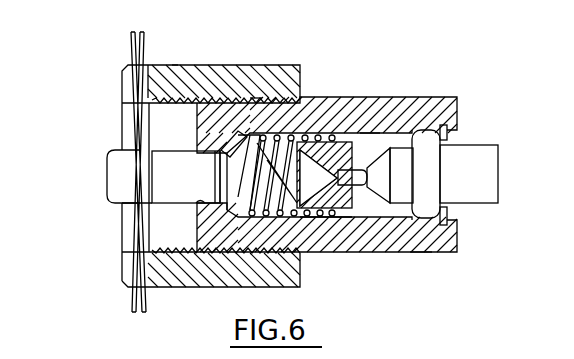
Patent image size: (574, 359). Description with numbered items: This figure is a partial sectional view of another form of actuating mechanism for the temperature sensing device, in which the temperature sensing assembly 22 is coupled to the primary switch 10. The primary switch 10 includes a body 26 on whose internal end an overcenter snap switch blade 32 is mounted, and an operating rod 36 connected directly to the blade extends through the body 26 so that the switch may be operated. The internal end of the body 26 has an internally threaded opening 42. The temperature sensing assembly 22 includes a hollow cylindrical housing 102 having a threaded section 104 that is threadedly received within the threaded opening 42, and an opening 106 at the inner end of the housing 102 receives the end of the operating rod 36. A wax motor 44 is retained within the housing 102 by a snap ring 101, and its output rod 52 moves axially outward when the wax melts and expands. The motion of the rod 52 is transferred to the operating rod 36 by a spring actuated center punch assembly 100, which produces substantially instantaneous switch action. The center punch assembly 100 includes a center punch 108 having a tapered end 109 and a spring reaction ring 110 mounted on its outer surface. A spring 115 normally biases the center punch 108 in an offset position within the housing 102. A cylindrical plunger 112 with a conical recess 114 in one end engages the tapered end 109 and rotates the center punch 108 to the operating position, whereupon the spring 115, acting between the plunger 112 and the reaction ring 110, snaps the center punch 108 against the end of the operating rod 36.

The primary switch 10 is at (173, 56).
The temperature sensing assembly 22 is at (469, 89).
The body 26 is at (216, 65).
The overcenter snap switch blade 32 is at (130, 45).
The operating rod 36 is at (112, 162).
The internally threaded opening 42 is at (182, 100).
The wax motor 44 is at (500, 153).
The output rod 52 is at (363, 186).
The center punch assembly 100 is at (333, 120).
The snap ring 101 is at (449, 131).
The housing 102 is at (421, 253).
The threaded section 104 is at (256, 96).
The opening 106 is at (199, 205).
The center punch 108 is at (237, 142).
The tapered end 109 is at (236, 212).
The spring reaction ring 110 is at (236, 205).
The cylindrical plunger 112 is at (371, 130).
The conical recess 114 is at (327, 219).
The spring 115 is at (295, 133).